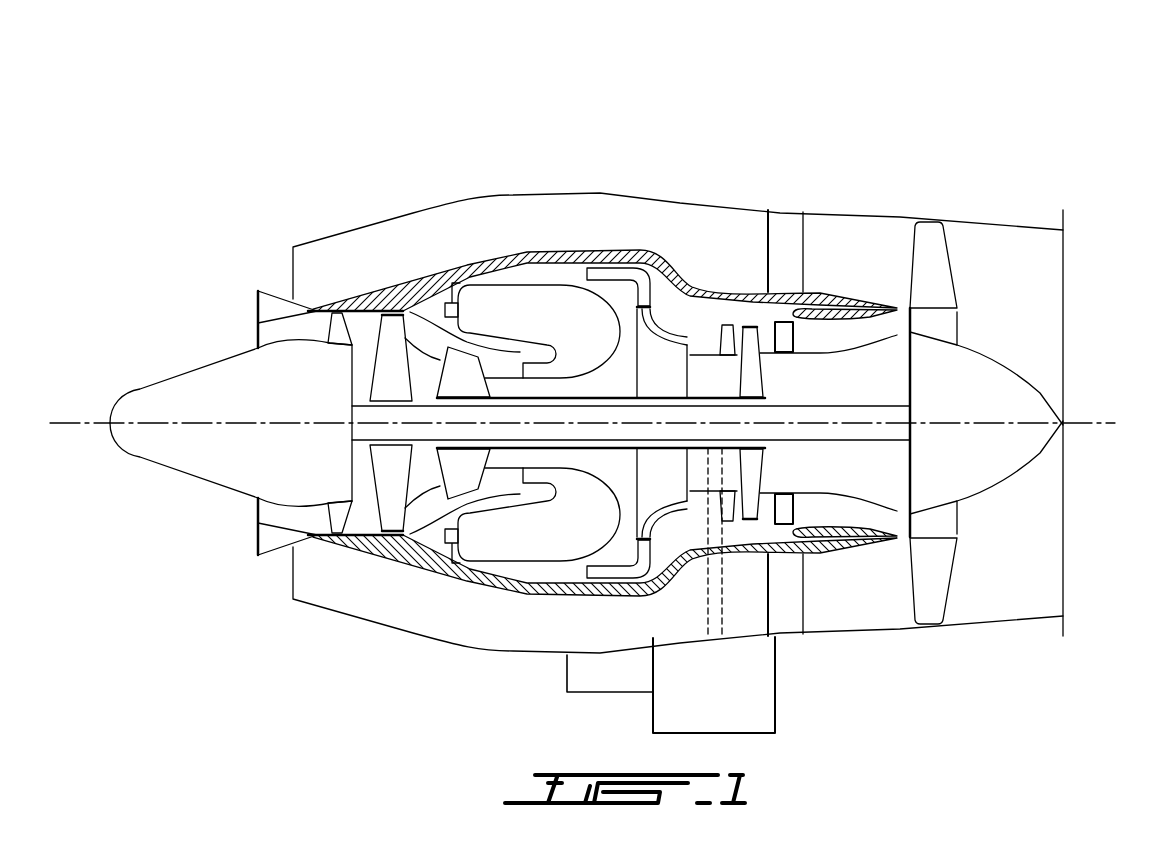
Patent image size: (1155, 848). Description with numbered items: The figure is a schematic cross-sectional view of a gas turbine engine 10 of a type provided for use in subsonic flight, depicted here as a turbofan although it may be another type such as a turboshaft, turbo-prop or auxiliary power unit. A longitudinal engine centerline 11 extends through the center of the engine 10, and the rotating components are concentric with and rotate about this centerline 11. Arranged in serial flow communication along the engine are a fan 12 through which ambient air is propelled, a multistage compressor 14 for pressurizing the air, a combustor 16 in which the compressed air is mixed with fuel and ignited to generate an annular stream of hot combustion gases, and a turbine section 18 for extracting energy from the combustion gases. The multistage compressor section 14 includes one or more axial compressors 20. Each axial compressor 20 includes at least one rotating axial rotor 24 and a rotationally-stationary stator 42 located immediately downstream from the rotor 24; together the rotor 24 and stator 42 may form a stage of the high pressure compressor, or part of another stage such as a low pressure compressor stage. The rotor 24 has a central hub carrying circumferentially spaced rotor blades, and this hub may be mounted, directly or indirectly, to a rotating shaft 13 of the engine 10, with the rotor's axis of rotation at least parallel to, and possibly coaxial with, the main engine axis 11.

The gas turbine engine 10 is at (942, 138).
The longitudinal engine centerline 11 is at (78, 421).
The fan 12 is at (937, 552).
The rotating shaft 13 is at (703, 395).
The multistage compressor 14 is at (720, 313).
The combustor 16 is at (538, 298).
The turbine section 18 is at (427, 480).
The axial compressor 20 is at (815, 292).
The axial rotor 24 is at (768, 308).
The stator 42 is at (745, 325).